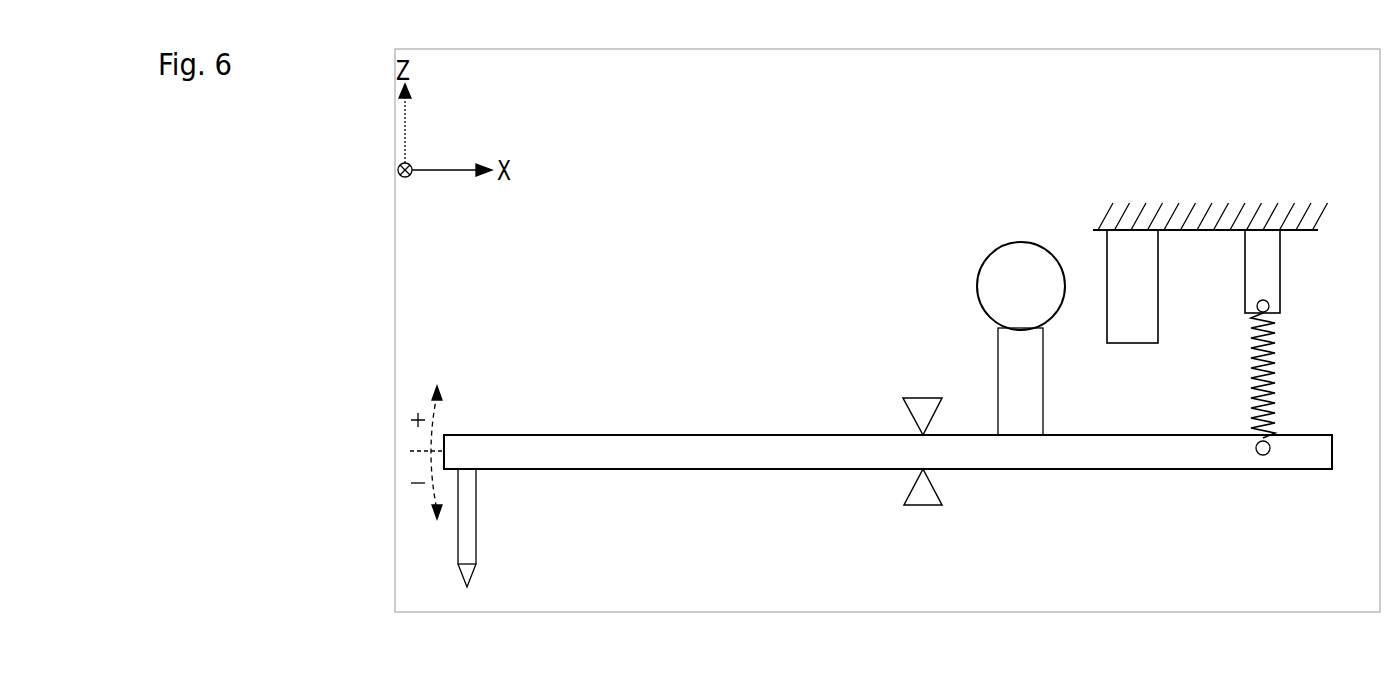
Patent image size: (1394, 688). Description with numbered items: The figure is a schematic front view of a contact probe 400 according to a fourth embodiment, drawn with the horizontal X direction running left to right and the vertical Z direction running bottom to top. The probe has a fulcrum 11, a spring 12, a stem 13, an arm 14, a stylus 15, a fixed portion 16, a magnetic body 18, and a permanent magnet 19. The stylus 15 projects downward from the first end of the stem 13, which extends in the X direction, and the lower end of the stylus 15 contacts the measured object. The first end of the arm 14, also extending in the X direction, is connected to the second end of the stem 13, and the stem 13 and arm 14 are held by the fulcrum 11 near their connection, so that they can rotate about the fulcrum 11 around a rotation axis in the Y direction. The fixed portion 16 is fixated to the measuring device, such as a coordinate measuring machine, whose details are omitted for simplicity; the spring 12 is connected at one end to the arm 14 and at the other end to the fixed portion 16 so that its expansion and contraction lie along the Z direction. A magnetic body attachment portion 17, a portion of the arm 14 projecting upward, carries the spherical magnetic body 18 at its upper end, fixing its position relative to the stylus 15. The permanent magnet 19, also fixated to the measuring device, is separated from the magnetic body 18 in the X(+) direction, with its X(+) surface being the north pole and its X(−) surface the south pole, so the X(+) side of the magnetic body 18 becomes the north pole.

The contact probe 400 is at (903, 130).
The fulcrum 11 is at (923, 508).
The spring 12 is at (1276, 375).
The stem 13 is at (720, 435).
The arm 14 is at (1108, 470).
The stylus 15 is at (477, 545).
The fixed portion 16 is at (1281, 277).
The magnetic body attachment portion 17 is at (1044, 411).
The magnetic body 18 is at (985, 263).
The permanent magnet 19 is at (1107, 258).